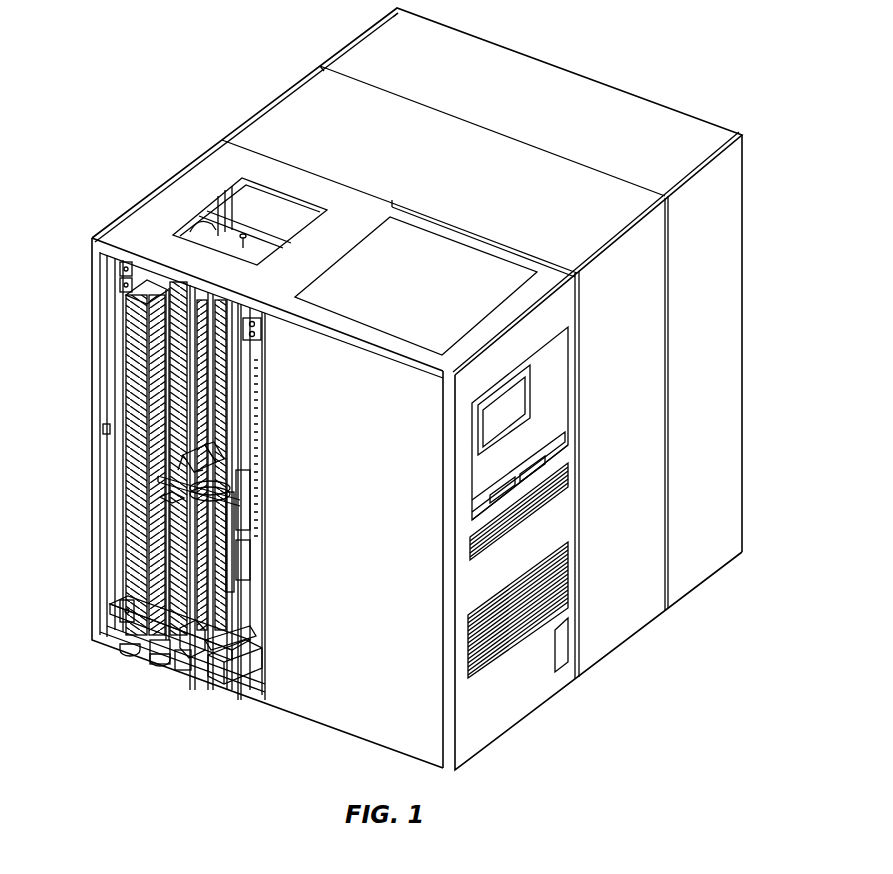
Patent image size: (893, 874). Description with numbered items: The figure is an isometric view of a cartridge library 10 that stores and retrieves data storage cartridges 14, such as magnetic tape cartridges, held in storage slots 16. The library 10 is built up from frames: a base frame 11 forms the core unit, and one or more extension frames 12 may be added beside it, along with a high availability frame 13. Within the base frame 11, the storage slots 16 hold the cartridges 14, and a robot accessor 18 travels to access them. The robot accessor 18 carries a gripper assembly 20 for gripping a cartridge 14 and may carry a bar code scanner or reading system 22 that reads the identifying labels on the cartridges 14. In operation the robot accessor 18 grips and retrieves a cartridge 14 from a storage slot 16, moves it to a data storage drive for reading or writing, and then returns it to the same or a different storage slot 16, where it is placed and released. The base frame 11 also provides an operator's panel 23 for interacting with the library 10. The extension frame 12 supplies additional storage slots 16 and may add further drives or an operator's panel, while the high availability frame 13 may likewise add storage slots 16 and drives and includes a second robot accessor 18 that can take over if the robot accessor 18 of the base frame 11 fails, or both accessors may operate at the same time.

The cartridge library 10 is at (172, 76).
The base frame 11 is at (302, 248).
The extension frame 12 is at (413, 177).
The high availability frame 13 is at (542, 60).
The data storage cartridges 14 is at (128, 300).
The storage slots 16 is at (96, 422).
The robot accessor 18 is at (196, 618).
The gripper assembly 20 is at (216, 490).
The bar code scanner or reading system 22 is at (212, 458).
The operator's panel 23 is at (555, 448).